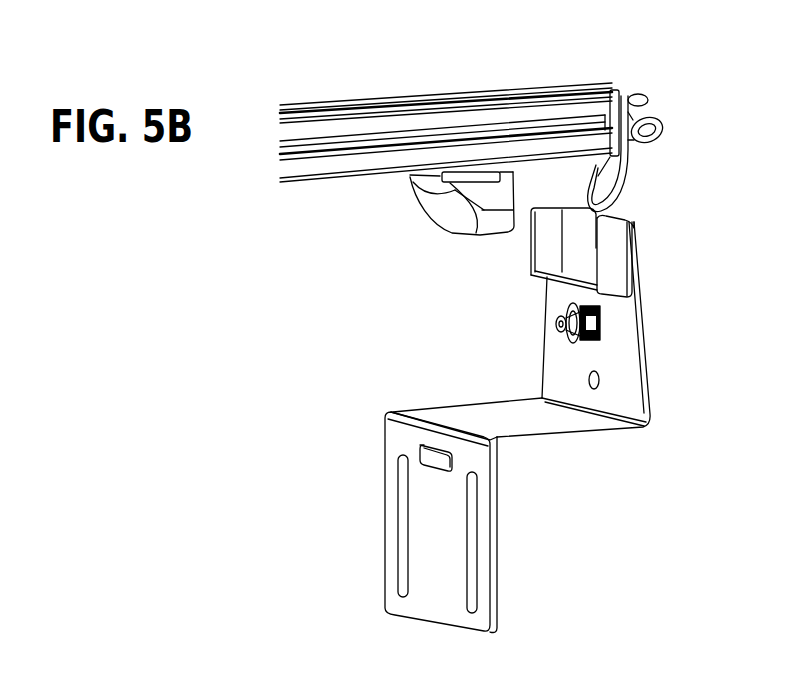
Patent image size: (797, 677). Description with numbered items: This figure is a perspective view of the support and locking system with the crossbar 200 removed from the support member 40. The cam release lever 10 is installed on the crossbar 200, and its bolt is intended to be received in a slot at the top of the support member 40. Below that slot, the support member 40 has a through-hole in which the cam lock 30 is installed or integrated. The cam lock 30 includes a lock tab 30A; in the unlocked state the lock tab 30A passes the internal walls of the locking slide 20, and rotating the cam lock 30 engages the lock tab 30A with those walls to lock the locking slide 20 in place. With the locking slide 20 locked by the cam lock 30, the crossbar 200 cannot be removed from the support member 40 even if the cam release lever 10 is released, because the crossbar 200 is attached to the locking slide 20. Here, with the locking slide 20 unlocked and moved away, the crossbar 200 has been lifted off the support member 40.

The crossbar 200 is at (395, 103).
The cam release lever 10 is at (600, 180).
The locking slide 20 is at (450, 208).
The cam lock 30 is at (556, 322).
The lock tab 30A is at (567, 337).
The support member 40 is at (627, 398).